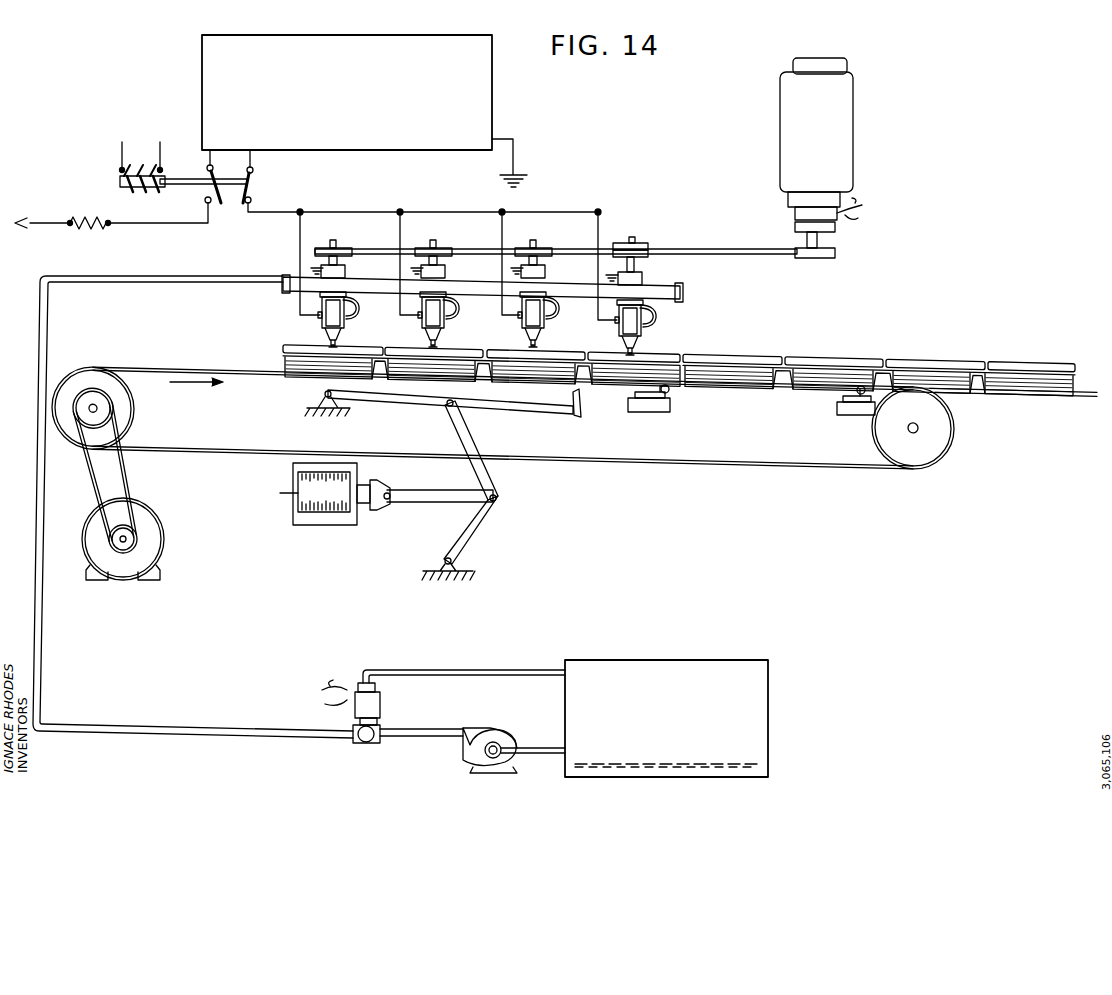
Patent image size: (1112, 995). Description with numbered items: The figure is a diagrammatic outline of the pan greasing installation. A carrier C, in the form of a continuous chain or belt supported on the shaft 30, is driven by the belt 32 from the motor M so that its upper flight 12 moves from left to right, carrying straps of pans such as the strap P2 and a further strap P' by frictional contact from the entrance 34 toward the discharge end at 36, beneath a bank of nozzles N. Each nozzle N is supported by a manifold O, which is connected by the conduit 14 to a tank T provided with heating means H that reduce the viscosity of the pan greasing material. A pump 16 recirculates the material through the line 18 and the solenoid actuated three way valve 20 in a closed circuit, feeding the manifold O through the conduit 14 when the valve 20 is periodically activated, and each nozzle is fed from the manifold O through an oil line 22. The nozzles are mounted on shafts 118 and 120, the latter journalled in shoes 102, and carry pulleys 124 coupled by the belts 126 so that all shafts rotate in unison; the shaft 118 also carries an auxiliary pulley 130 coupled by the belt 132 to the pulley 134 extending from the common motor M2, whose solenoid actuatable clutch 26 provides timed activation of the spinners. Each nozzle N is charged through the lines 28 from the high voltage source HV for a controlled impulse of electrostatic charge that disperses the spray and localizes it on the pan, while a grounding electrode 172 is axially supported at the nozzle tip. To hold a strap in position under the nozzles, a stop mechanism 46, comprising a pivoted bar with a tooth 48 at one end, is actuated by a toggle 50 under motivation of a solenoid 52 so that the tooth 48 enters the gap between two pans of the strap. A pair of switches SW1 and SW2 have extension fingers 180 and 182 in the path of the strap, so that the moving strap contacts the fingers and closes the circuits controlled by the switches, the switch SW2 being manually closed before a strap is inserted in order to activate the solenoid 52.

The upper flight 12 is at (222, 367).
The conduit 14 is at (97, 277).
The pump 16 is at (480, 756).
The line 18 is at (474, 674).
The three way valve 20 is at (368, 702).
The oil lines 22 is at (359, 313).
The solenoid actuatable clutch 26 is at (781, 212).
The lines 28 is at (298, 223).
The shaft 30 is at (97, 406).
The belt 32 is at (130, 482).
The entrance 34 is at (90, 356).
The discharge table 36 is at (1087, 351).
The stop mechanism 46 is at (504, 415).
The tooth 48 is at (580, 404).
The toggle 50 is at (484, 475).
The solenoid 52 is at (292, 493).
The shoes 102 is at (341, 273).
The shaft 118 is at (633, 240).
The shafts 120 is at (330, 243).
The pulleys 124 is at (352, 241).
The belts 126 is at (357, 256).
The upper plate 130 is at (638, 244).
The belts 132 is at (746, 250).
The pulleys 134 is at (822, 258).
The grounding electrode 172 is at (339, 344).
The extension finger 180 is at (669, 389).
The extension finger 182 is at (866, 392).
The nozzles N is at (314, 328).
The manifold O is at (283, 278).
The strap of pans P2 is at (276, 346).
The rail P' is at (879, 354).
The motor M is at (150, 540).
The motor M2 is at (795, 98).
The switch SW1 is at (646, 412).
The switch SW2 is at (848, 415).
The carrier C is at (743, 457).
The tank T is at (697, 673).
The heating means H is at (660, 762).
The high voltage source HV is at (347, 92).